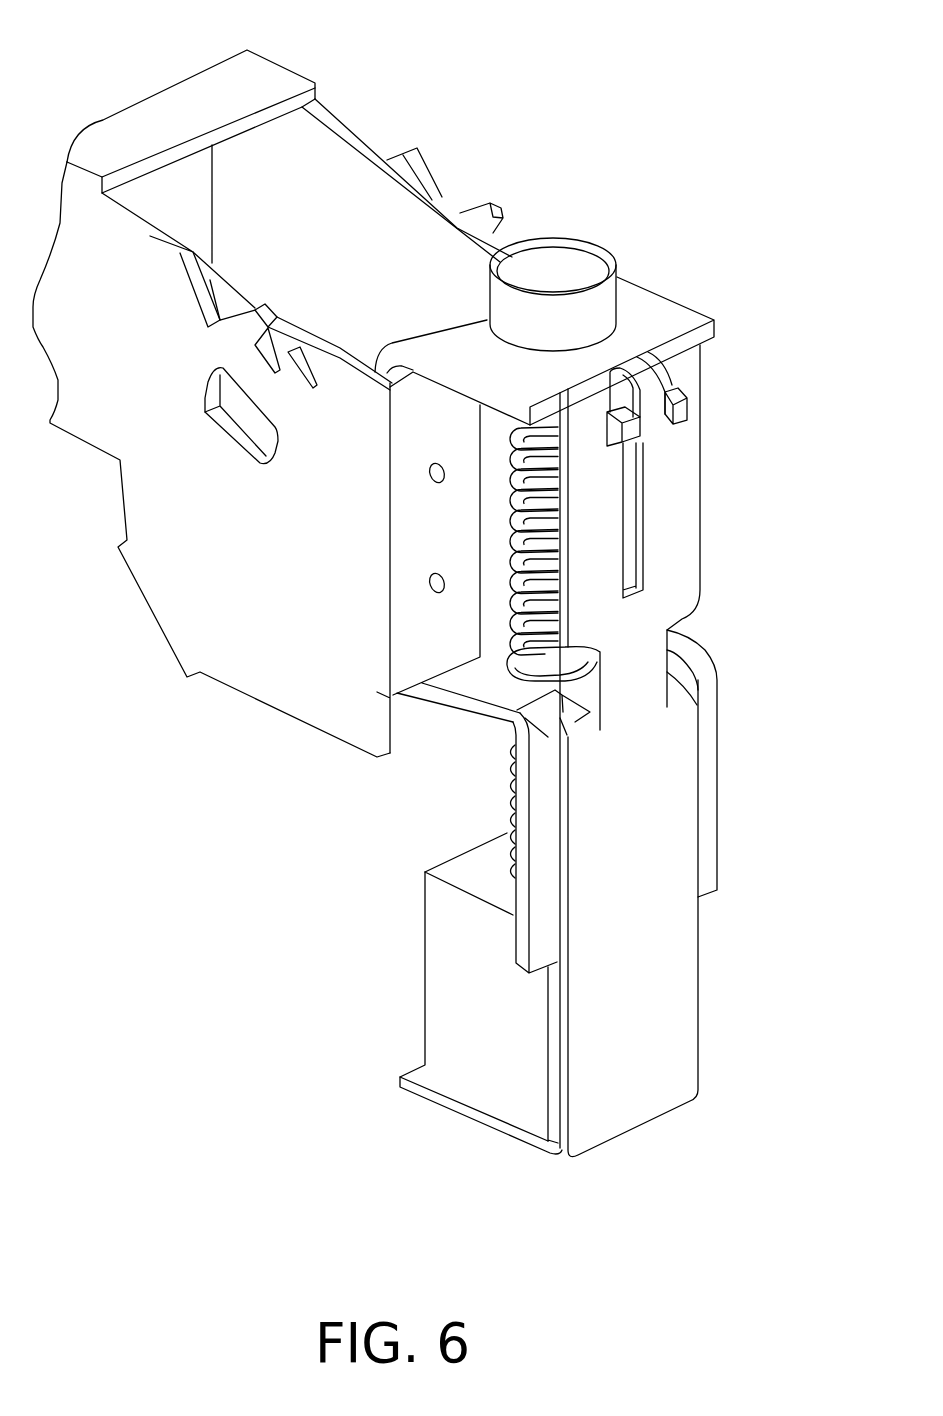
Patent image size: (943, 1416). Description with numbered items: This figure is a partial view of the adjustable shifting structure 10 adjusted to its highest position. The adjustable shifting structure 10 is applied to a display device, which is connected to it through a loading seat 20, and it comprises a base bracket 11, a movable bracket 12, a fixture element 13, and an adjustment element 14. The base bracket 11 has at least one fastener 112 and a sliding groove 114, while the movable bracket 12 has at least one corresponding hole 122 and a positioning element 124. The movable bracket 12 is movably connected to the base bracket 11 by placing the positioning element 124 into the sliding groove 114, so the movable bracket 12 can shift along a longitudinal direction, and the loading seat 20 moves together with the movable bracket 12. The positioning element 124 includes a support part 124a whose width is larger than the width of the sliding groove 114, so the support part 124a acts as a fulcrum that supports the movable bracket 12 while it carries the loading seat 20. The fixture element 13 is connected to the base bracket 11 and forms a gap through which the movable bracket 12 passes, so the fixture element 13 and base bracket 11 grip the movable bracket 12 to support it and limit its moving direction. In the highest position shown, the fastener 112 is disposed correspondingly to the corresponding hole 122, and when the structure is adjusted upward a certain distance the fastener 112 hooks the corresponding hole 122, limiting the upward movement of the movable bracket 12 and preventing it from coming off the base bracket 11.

The adjustable shifting structure 10 is at (722, 137).
The base bracket 11 is at (637, 1103).
The movable bracket 12 is at (654, 317).
The fixture element 13 is at (482, 1078).
The adjustment element 14 is at (570, 257).
The loading seat 20 is at (187, 582).
The fastener 112 is at (577, 727).
The sliding groove 114 is at (630, 547).
The corresponding hole 122 is at (538, 705).
The positioning element 124 is at (650, 383).
The support part 124a is at (668, 410).